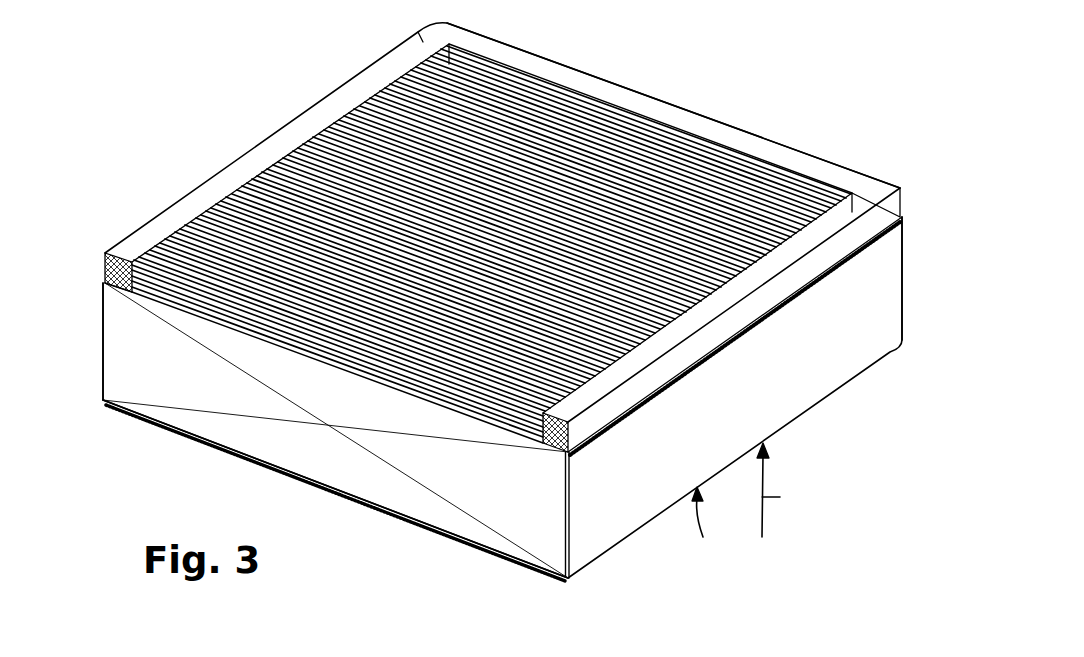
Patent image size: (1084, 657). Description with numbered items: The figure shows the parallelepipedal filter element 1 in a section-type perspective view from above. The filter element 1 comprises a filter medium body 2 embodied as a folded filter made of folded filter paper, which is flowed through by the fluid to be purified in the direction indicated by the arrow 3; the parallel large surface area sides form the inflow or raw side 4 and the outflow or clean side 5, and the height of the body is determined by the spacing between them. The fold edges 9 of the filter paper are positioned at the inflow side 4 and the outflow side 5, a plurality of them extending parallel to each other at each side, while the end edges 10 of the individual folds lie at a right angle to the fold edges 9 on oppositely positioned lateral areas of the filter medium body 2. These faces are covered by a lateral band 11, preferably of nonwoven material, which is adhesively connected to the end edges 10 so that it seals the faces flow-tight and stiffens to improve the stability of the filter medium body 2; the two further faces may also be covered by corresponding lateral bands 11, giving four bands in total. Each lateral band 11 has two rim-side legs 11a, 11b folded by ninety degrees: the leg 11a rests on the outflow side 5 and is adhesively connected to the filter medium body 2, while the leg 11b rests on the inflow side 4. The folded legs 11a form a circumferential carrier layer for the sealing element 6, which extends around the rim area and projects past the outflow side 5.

The filter element 1 is at (289, 96).
The filter medium body 2 is at (632, 156).
The arrow 3 is at (783, 490).
The inflow side 4 is at (707, 528).
The outflow side 5 is at (269, 199).
The sealing element 6 is at (578, 80).
The fold edges 9 is at (366, 364).
The end edges 10 is at (100, 389).
The lateral band 11 is at (102, 330).
The rim-side leg 11a is at (102, 283).
The rim-side leg 11b is at (120, 413).